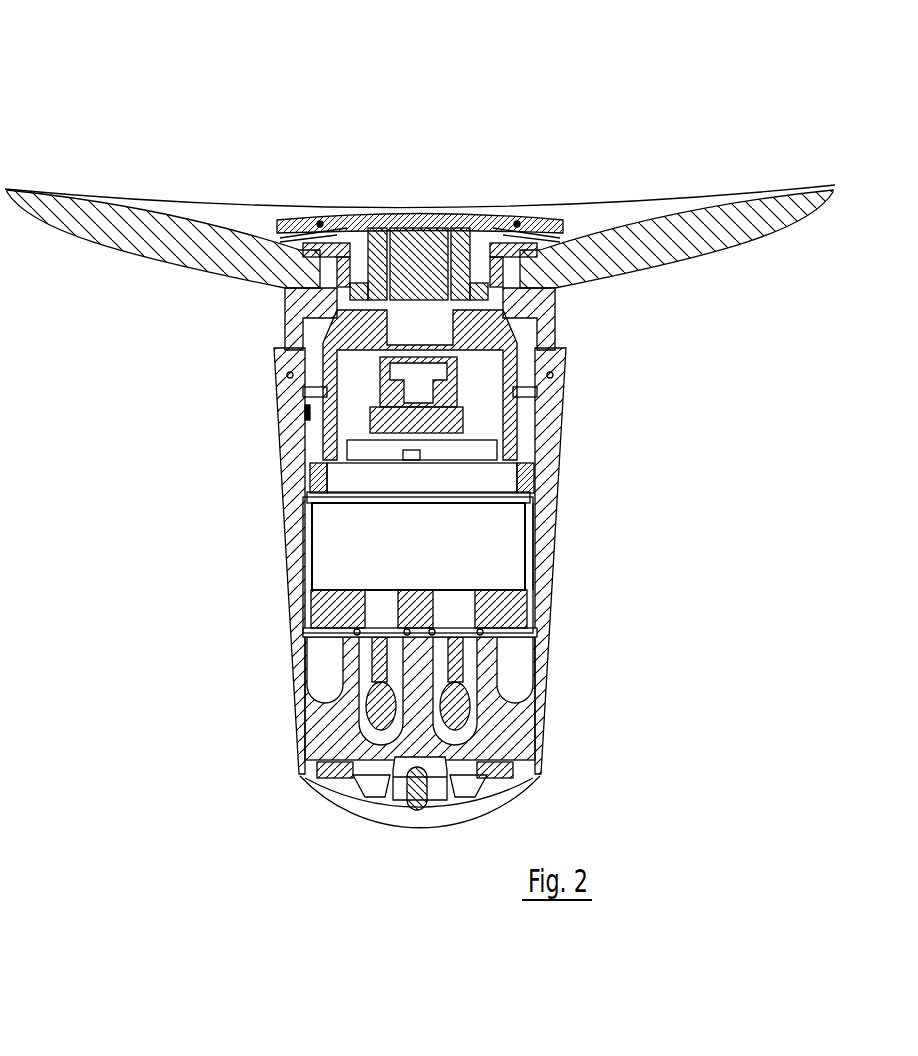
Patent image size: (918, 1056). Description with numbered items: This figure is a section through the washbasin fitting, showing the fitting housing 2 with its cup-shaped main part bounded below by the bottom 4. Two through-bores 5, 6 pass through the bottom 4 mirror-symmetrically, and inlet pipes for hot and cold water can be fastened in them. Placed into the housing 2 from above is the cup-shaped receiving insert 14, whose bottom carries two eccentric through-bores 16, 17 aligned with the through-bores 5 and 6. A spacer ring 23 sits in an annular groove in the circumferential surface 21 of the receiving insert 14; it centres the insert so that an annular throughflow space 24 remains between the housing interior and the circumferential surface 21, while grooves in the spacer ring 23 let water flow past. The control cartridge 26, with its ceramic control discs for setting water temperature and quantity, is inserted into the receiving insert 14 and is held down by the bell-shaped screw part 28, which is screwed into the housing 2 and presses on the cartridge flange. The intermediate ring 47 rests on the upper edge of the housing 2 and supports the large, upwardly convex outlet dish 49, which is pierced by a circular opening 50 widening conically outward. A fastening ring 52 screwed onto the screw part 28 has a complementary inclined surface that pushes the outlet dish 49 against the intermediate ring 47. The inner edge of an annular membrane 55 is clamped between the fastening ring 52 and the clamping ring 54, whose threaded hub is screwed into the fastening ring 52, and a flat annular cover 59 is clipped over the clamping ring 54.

The fitting housing 2 is at (304, 735).
The bottom 4 is at (535, 722).
The through-bore 5 is at (470, 655).
The through-bore 6 is at (368, 665).
The receiving insert 14 is at (310, 535).
The through-bore 16 is at (382, 590).
The through-bore 17 is at (460, 606).
The circumferential surface 21 is at (537, 558).
The spacer ring 23 is at (305, 612).
The annular throughflow space 24 is at (523, 440).
The control cartridge 26 is at (433, 543).
The screw part 28 is at (320, 427).
The intermediate ring 47 is at (556, 300).
The outlet dish 49 is at (114, 204).
The circular opening 50 is at (530, 232).
The fastening ring 52 is at (470, 220).
The clamping ring 54 is at (380, 220).
The annular membrane 55 is at (303, 222).
The annular cover 59 is at (293, 231).